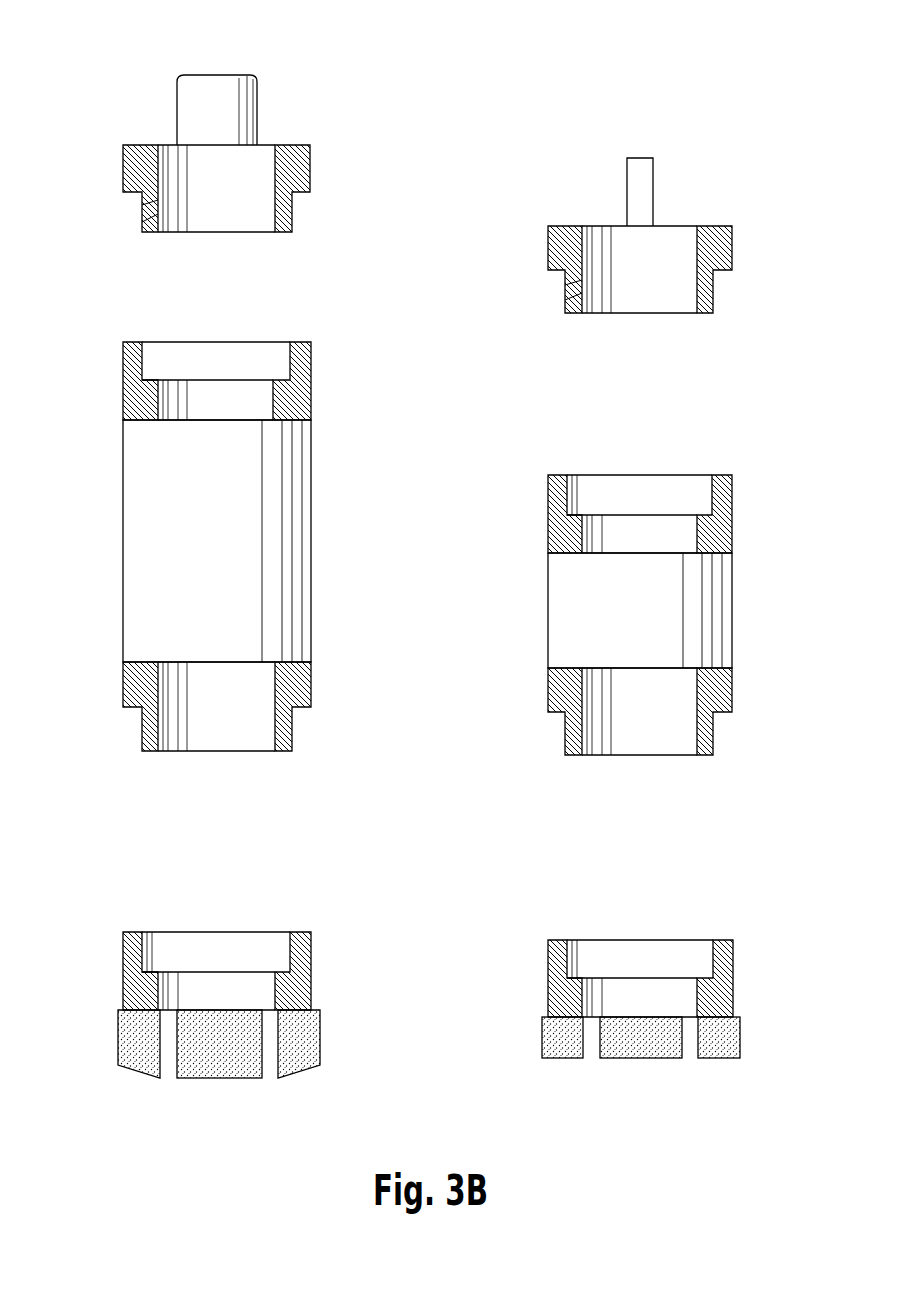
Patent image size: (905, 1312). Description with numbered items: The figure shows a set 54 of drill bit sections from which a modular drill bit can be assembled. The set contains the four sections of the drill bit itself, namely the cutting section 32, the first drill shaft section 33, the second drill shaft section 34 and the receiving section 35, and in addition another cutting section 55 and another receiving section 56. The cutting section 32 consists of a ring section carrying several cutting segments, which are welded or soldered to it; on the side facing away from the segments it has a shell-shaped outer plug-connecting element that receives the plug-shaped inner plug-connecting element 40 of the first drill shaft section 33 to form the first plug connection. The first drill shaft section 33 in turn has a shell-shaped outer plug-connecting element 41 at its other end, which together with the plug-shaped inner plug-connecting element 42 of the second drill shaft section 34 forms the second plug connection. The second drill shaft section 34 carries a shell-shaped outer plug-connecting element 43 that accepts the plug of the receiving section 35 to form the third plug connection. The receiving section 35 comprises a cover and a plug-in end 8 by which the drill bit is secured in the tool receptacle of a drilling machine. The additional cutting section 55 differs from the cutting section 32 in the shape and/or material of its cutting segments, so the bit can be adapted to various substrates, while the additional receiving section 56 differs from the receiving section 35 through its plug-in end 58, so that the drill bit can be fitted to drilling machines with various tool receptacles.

The plug-in end 8 is at (190, 113).
The cutting section 32 is at (233, 914).
The first drill shaft section 33 is at (562, 610).
The second drill shaft section 34 is at (150, 553).
The receiving section 35 is at (273, 82).
The second inner plug-connecting element 40 is at (713, 727).
The first outer plug-connecting element 41 is at (732, 492).
The second inner plug-connecting element 42 is at (293, 732).
The first outer plug-connecting element 43 is at (311, 352).
The set of drill bit sections 54 is at (438, 116).
The additional cutting section 55 is at (651, 924).
The additional receiving section 56 is at (697, 150).
The plug-in end 58 is at (637, 187).